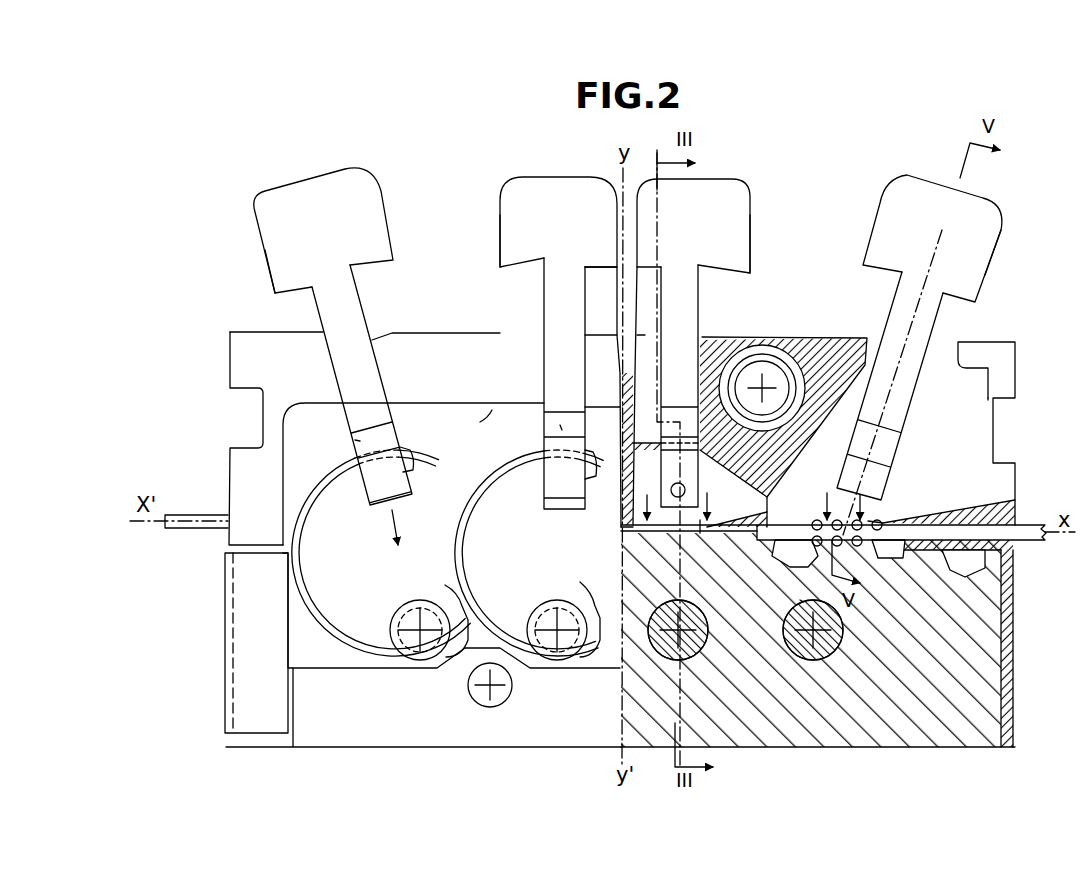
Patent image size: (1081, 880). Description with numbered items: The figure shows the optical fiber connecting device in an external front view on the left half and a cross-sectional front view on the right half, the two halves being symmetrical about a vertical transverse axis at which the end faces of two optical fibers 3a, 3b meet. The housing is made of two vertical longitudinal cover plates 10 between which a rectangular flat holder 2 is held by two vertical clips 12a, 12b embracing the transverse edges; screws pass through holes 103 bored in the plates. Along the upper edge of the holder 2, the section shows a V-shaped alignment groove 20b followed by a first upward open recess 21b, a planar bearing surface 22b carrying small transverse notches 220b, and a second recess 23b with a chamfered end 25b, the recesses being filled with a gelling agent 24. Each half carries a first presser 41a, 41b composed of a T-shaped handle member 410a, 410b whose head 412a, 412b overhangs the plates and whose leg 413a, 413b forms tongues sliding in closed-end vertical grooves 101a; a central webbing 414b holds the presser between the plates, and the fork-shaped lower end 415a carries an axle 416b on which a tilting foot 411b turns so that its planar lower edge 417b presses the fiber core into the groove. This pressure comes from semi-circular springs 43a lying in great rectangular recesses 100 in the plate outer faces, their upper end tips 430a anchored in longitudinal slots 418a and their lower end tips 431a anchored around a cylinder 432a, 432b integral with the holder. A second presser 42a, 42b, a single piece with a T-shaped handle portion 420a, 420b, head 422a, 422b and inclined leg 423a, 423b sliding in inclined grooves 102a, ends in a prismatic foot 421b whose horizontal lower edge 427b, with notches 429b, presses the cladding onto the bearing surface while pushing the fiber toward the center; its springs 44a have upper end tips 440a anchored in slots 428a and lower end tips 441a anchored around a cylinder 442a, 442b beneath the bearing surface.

The holder 2 is at (860, 749).
The optical fiber 3a is at (192, 512).
The optical fiber 3b is at (1039, 522).
The cover plate 10 is at (247, 340).
The clip 12a is at (230, 694).
The clip 12b is at (1014, 731).
The V-shaped fiber alignment groove half 20b is at (698, 534).
The first upward open recess 21b is at (794, 563).
The bearing surface 22b is at (875, 550).
The second upward open recess 23b is at (946, 550).
The gelling agent 24 is at (758, 472).
The chamfered end 25b is at (927, 578).
The first presser 41a is at (525, 318).
The first presser 41b is at (728, 451).
The second presser 42a is at (340, 319).
The second presser 42b is at (947, 326).
The spring 43a is at (529, 553).
The spring 44a is at (381, 553).
The recess 100 is at (465, 424).
The closed-end vertical groove 101a is at (540, 510).
The closed-end groove 102a is at (391, 508).
The hole 103 is at (468, 690).
The transverse notch 220b is at (802, 602).
The handle member 410a is at (571, 238).
The handle member 410b is at (687, 228).
The tilting foot 411b is at (731, 520).
The head 412a is at (503, 218).
The head 412b is at (750, 232).
The leg 413a is at (548, 310).
The leg 413b is at (700, 312).
The central webbing 414b is at (656, 292).
The lower end of leg 415a is at (560, 450).
The axle 416b is at (680, 478).
The lower edge of tilting foot 417b is at (636, 545).
The longitudinal slot 418a is at (560, 425).
The handle portion 420a is at (324, 237).
The handle portion 420b is at (932, 231).
The foot 421b is at (947, 462).
The head 422a is at (269, 246).
The head 422b is at (1001, 231).
The leg 423a is at (352, 307).
The leg 423b is at (900, 291).
The lower edge of foot 427b is at (818, 519).
The longitudinal slot 428a is at (357, 441).
The transverse notch 429b is at (869, 520).
The upper end tip 430a is at (621, 528).
The lower end tip 431a is at (602, 619).
The cylinder 432a is at (556, 598).
The cylinder 432b is at (700, 656).
The upper end tip 440a is at (420, 464).
The lower end tip 441a is at (428, 609).
The cylinder 442a is at (399, 606).
The cylinder 442b is at (838, 653).